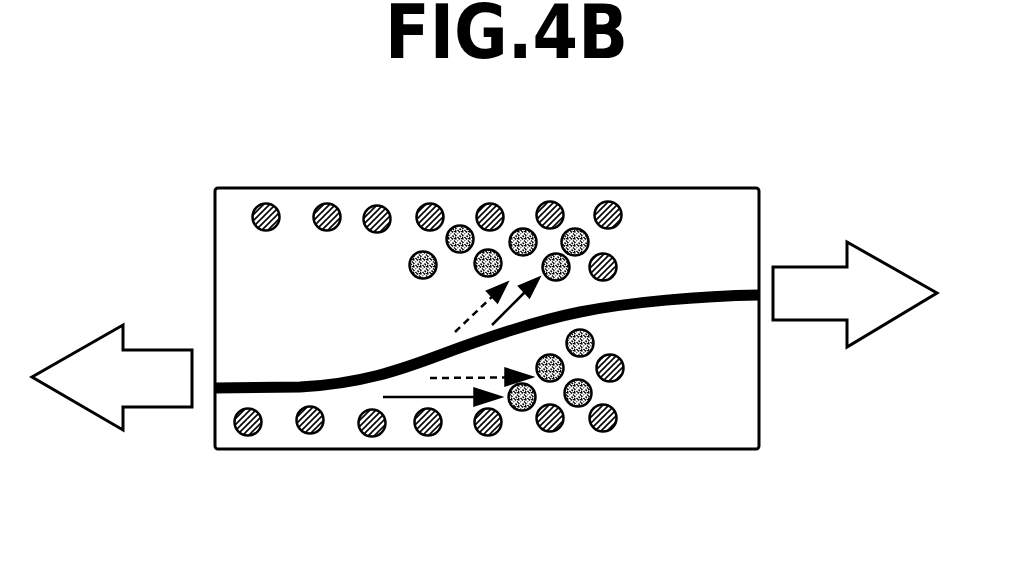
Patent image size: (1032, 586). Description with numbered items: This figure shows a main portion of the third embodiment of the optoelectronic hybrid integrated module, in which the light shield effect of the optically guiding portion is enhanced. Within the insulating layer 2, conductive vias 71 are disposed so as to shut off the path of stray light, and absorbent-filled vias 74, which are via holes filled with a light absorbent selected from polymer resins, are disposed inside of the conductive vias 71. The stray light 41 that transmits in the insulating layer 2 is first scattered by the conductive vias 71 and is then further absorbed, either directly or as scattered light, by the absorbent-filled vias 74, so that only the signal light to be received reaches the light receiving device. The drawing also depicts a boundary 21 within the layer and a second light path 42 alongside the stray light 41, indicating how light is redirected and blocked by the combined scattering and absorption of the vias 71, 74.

The insulating layer 2 is at (725, 210).
The partition membrane 21 is at (703, 303).
The stray light 41 is at (480, 309).
The second fluid flow 42 is at (520, 286).
The conductive vias 71 is at (243, 436).
The absorbent-filled vias 74 is at (410, 265).